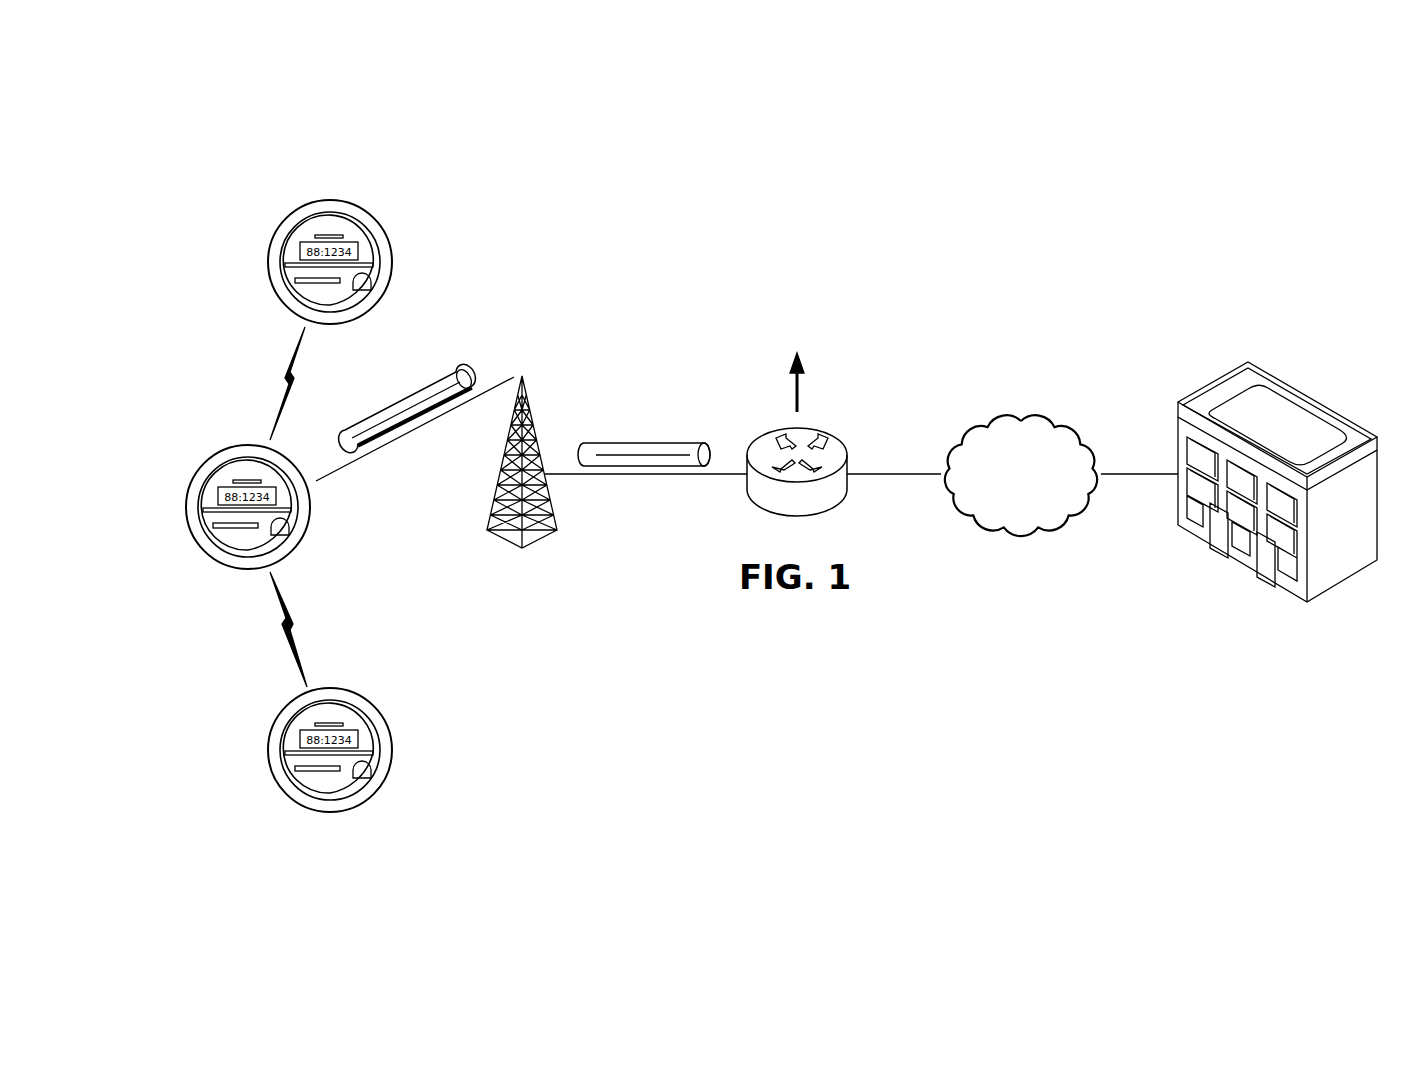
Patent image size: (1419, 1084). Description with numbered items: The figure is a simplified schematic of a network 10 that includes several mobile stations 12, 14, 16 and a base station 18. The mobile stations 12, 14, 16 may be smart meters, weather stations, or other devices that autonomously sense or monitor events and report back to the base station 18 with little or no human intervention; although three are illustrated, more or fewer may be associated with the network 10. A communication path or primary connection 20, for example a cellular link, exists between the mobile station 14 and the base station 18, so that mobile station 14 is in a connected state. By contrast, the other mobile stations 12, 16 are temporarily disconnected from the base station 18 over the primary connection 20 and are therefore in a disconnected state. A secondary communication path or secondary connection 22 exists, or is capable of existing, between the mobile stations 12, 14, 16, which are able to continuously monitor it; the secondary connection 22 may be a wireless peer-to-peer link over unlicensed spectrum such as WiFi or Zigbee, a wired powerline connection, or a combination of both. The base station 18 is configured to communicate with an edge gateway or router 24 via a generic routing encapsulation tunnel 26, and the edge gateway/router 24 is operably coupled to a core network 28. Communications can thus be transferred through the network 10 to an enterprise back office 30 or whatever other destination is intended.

The network 10 is at (1110, 311).
The mobile station 12 is at (330, 199).
The mobile station 14 is at (228, 451).
The mobile station 16 is at (330, 812).
The base station 18 is at (504, 545).
The primary connection 20 is at (386, 448).
The secondary connection 22 is at (292, 350).
The edge gateway or router 24 is at (838, 432).
The generic routing encapsulation (GRE) tunnel 26 is at (648, 478).
The core network 28 is at (1022, 412).
The enterprise back office 30 is at (1312, 397).